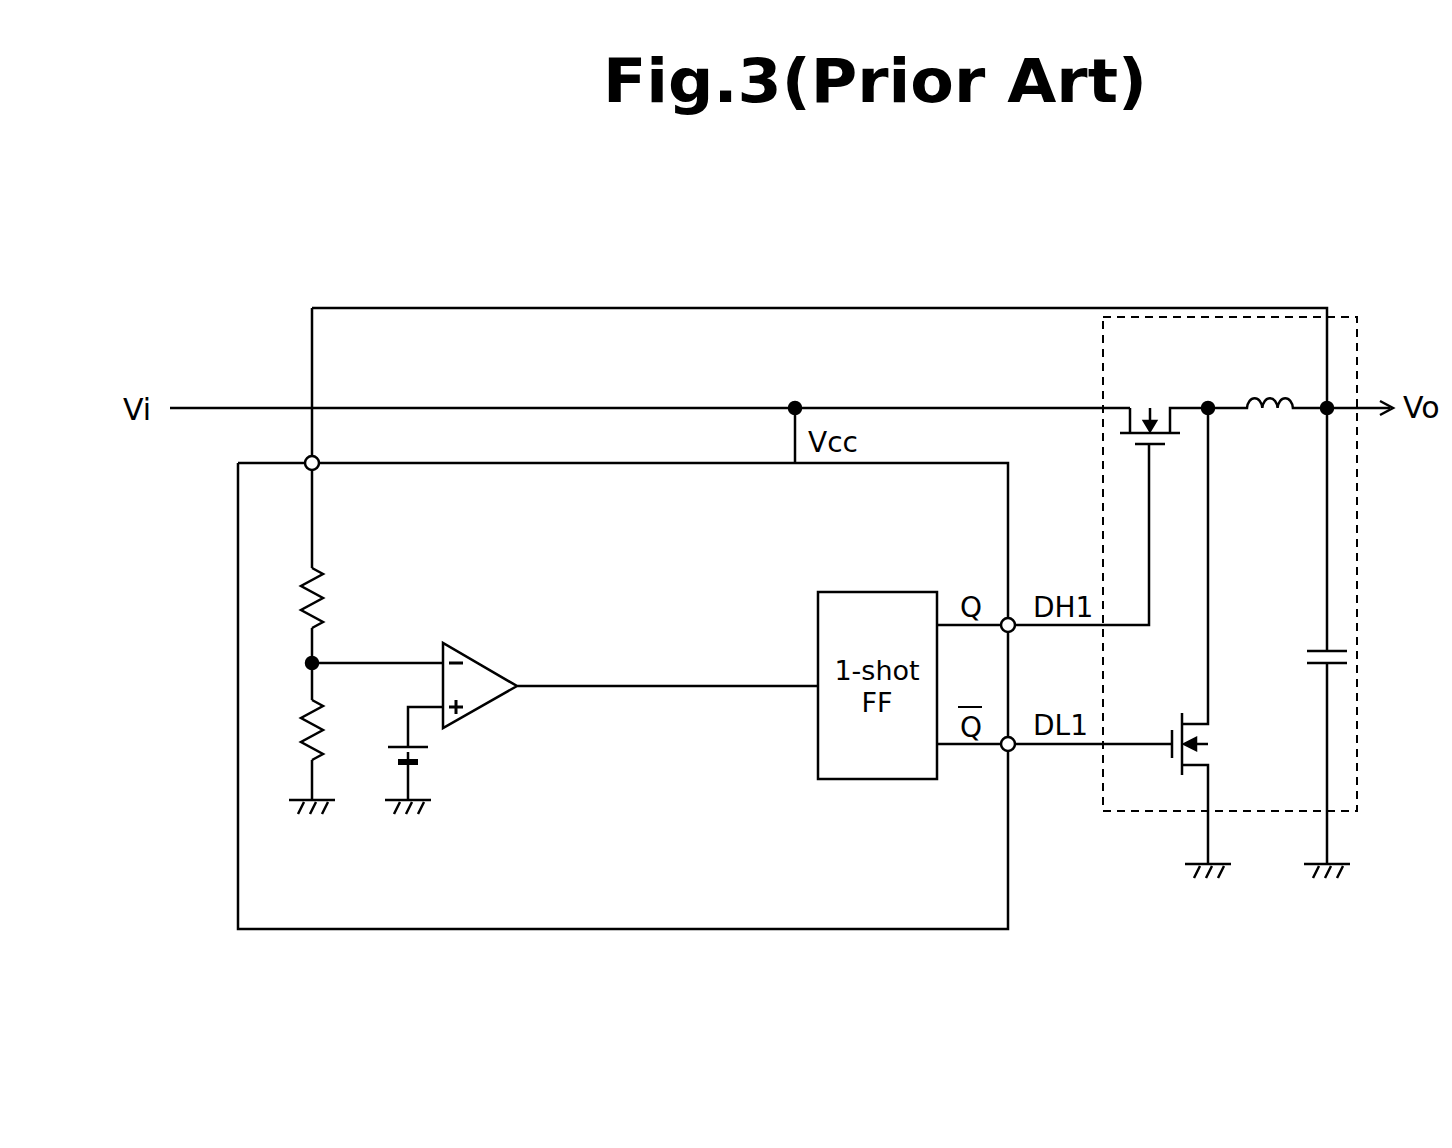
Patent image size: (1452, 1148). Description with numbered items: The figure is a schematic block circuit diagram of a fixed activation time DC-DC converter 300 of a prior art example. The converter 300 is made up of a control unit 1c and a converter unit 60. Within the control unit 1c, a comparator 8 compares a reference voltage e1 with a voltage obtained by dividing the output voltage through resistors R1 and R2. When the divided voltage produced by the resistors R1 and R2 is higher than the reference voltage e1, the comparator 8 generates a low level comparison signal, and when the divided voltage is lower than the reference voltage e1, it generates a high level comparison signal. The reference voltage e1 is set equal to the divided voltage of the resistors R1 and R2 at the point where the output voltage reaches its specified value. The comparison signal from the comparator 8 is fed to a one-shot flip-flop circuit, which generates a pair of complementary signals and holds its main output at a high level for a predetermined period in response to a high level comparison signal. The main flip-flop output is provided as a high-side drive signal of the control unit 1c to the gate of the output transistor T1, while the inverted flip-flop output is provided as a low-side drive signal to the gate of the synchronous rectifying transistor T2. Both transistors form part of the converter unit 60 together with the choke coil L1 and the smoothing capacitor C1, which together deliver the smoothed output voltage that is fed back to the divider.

The fixed activation time DC-DC converter 300 is at (1347, 298).
The converter unit 60 is at (1357, 475).
The control unit 1c is at (1010, 878).
The comparator 8 is at (490, 666).
The resistor R1 is at (349, 605).
The resistor R2 is at (349, 721).
The reference voltage e1 is at (427, 778).
The output transistor T1 is at (1132, 411).
The synchronous rectifying transistor T2 is at (1200, 764).
The choke coil L1 is at (1262, 387).
The smoothing capacitor C1 is at (1320, 650).